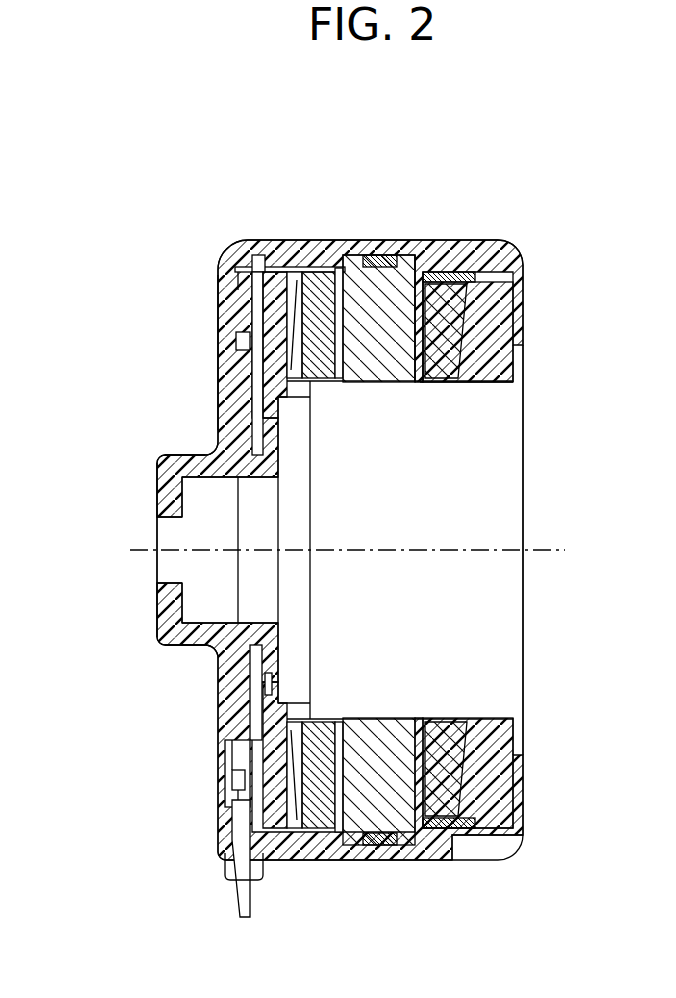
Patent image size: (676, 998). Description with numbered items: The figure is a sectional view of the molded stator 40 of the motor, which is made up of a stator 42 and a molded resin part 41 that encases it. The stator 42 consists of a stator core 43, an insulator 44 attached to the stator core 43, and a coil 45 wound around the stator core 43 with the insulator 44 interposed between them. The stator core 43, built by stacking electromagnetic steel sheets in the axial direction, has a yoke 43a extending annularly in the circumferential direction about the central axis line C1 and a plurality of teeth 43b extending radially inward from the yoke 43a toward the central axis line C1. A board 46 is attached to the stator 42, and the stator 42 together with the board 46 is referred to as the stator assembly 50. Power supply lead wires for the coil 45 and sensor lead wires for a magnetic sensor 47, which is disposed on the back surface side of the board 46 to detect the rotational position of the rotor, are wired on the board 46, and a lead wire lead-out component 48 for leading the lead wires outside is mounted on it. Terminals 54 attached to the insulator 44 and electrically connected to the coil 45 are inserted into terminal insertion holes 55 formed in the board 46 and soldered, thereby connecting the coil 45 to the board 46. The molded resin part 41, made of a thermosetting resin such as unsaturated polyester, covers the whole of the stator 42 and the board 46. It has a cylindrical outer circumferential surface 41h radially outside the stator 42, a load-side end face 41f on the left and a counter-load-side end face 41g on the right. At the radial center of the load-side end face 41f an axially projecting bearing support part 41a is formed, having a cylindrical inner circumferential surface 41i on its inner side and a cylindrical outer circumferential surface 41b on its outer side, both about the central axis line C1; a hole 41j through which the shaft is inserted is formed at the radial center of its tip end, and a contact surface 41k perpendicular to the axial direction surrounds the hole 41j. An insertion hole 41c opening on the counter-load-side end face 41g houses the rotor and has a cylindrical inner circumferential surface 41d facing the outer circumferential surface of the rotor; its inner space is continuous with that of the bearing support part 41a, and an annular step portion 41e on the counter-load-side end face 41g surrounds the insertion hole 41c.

The molded stator 40 is at (312, 528).
The molded resin part 41 is at (348, 515).
The bearing support part 41a is at (165, 472).
The outer circumferential surface 41b is at (177, 453).
The insertion hole 41c is at (495, 525).
The inner circumferential surface 41d is at (490, 382).
The annular step portion 41e is at (518, 735).
The load-side end face 41f is at (218, 338).
The counter-load-side end face 41g is at (523, 340).
The outer circumferential surface 41h is at (417, 240).
The inner circumferential surface 41i is at (205, 480).
The hole 41j is at (170, 573).
The contact surface 41k is at (175, 617).
The stator 42 is at (482, 297).
The stator core 43 is at (347, 527).
The yoke 43a is at (373, 317).
The teeth 43b is at (317, 257).
The insulator 44 is at (467, 277).
The coil 45 is at (447, 787).
The board 46 is at (258, 740).
The magnetic sensor 47 is at (266, 683).
The lead wire lead-out component 48 is at (230, 822).
The stator assembly 50 is at (247, 303).
The terminals 54 is at (240, 258).
The terminal insertion holes 55 is at (255, 255).
The central axis line C1 is at (568, 552).